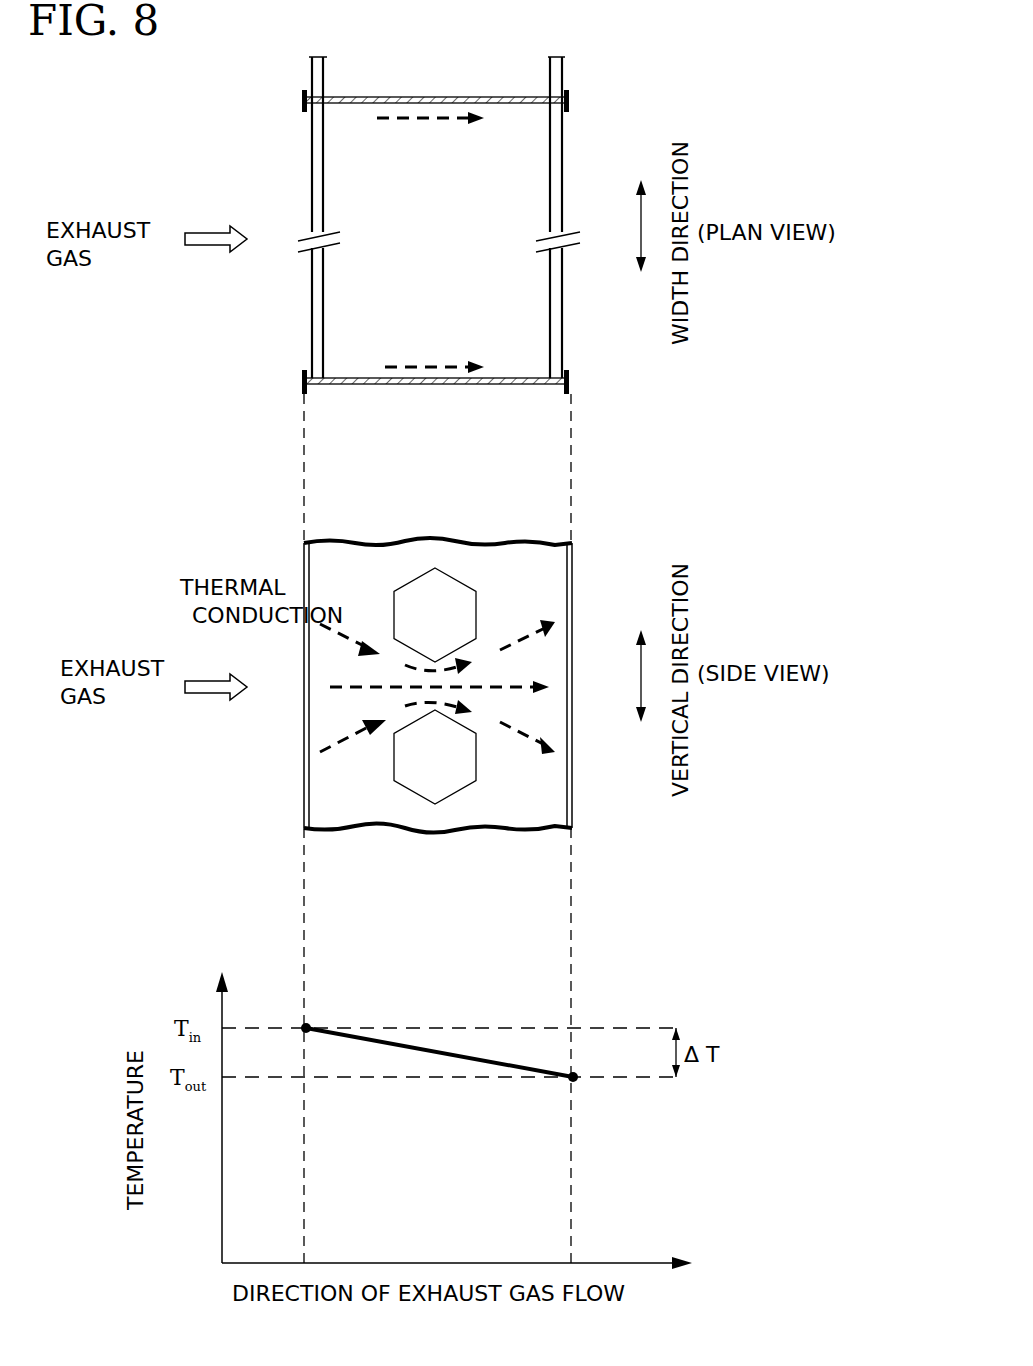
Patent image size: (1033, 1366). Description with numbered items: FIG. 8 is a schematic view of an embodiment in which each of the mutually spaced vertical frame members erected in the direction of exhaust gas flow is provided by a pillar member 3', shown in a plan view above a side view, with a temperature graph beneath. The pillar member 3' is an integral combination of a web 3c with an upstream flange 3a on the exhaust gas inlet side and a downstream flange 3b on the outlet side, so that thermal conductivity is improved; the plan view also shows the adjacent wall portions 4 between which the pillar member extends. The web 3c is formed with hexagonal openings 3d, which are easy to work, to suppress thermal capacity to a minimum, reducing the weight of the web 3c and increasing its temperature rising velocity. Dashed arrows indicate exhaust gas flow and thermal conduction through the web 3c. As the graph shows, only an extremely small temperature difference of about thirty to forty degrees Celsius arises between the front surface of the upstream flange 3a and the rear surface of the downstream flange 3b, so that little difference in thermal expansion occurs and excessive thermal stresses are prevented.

The pillar member 3' is at (240, 437).
The upstream flange 3a is at (303, 93).
The downstream flange 3b is at (569, 97).
The web 3c is at (506, 97).
The openings 3d is at (412, 97).
The exhaust pipe wall 4 is at (312, 292).